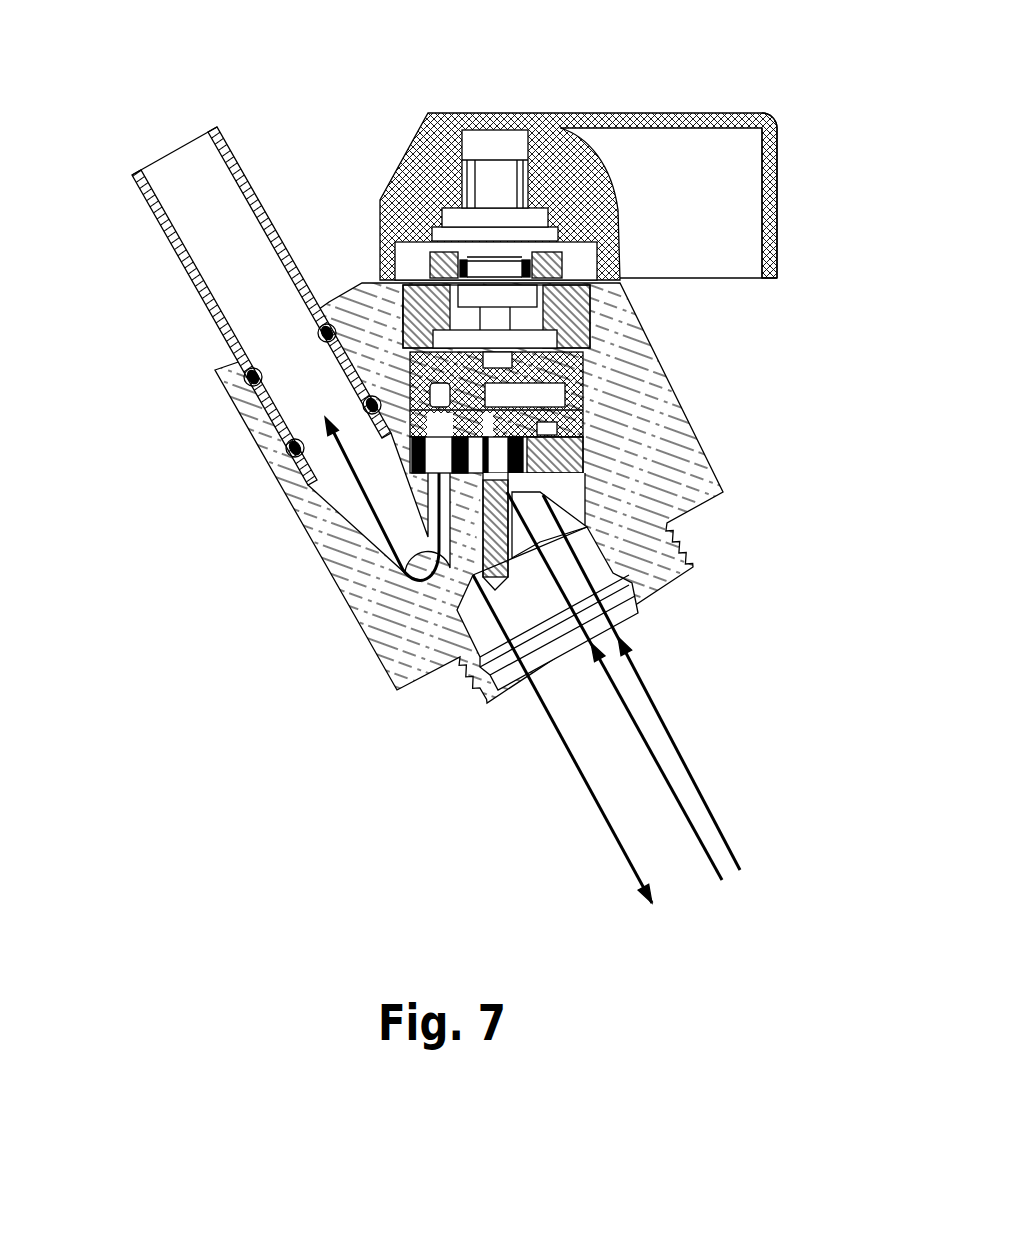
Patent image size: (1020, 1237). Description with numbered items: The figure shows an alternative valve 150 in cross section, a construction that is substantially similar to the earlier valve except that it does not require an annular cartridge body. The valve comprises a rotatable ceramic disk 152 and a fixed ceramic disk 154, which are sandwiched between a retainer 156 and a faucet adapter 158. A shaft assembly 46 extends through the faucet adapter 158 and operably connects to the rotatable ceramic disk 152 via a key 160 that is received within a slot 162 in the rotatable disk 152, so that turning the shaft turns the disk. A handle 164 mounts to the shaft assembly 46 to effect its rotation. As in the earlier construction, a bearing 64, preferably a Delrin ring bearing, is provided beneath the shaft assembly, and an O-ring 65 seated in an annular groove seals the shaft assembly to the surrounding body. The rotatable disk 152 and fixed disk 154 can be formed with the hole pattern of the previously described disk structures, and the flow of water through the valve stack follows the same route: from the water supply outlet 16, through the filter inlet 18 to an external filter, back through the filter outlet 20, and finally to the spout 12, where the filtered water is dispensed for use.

The spout 12 is at (175, 281).
The water supply outlet 16 is at (667, 735).
The filter inlet 18 is at (653, 760).
The filter outlet 20 is at (563, 745).
The handle shaft assembly 46 is at (509, 142).
The bearing 64 is at (598, 345).
The O-ring 65 is at (598, 316).
The alternative valve 150 is at (393, 263).
The rotatable ceramic disk 152 is at (600, 397).
The fixed ceramic disk 154 is at (600, 433).
The retainer 156 is at (587, 468).
The faucet adapter 158 is at (613, 290).
The key 160 is at (397, 433).
The slot 162 is at (440, 417).
The handle 164 is at (773, 127).